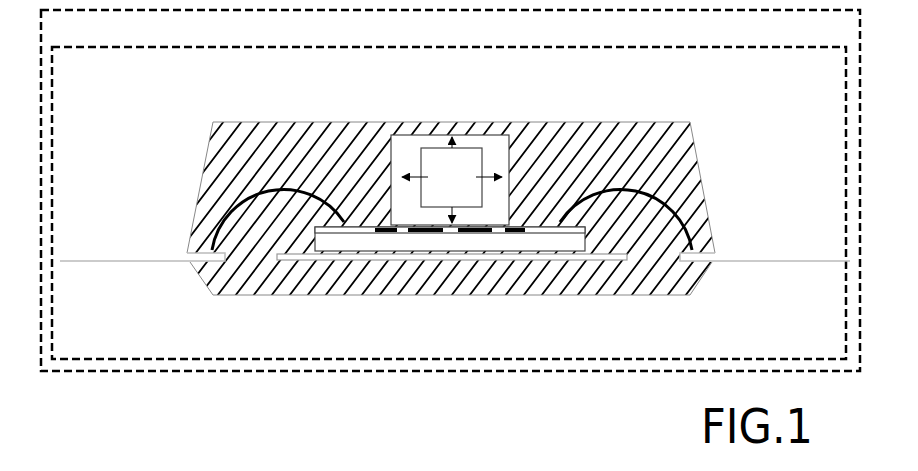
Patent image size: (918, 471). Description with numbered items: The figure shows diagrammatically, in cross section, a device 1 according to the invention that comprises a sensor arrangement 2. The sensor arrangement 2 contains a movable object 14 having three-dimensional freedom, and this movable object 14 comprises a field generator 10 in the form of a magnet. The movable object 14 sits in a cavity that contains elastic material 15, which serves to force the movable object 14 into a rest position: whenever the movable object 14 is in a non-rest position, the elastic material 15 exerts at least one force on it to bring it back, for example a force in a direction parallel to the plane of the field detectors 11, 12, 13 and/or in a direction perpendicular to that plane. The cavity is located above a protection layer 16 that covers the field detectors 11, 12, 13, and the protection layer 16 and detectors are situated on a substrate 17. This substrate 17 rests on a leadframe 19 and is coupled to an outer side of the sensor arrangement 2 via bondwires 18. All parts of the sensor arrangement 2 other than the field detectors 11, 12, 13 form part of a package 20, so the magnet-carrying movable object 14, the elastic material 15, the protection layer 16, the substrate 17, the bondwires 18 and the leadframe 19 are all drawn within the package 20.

The device 1 is at (850, 37).
The sensor arrangement 2 is at (835, 78).
The field generator 10 is at (468, 153).
The field detector 11 is at (390, 232).
The field detector 12 is at (418, 290).
The field detector 13 is at (470, 232).
The movable object 14 is at (463, 172).
The elastic material 15 is at (451, 141).
The protection layer 16 is at (540, 225).
The substrate 17 is at (573, 242).
The bondwires 18 is at (688, 233).
The leadframe 19 is at (157, 256).
The package 20 is at (215, 202).